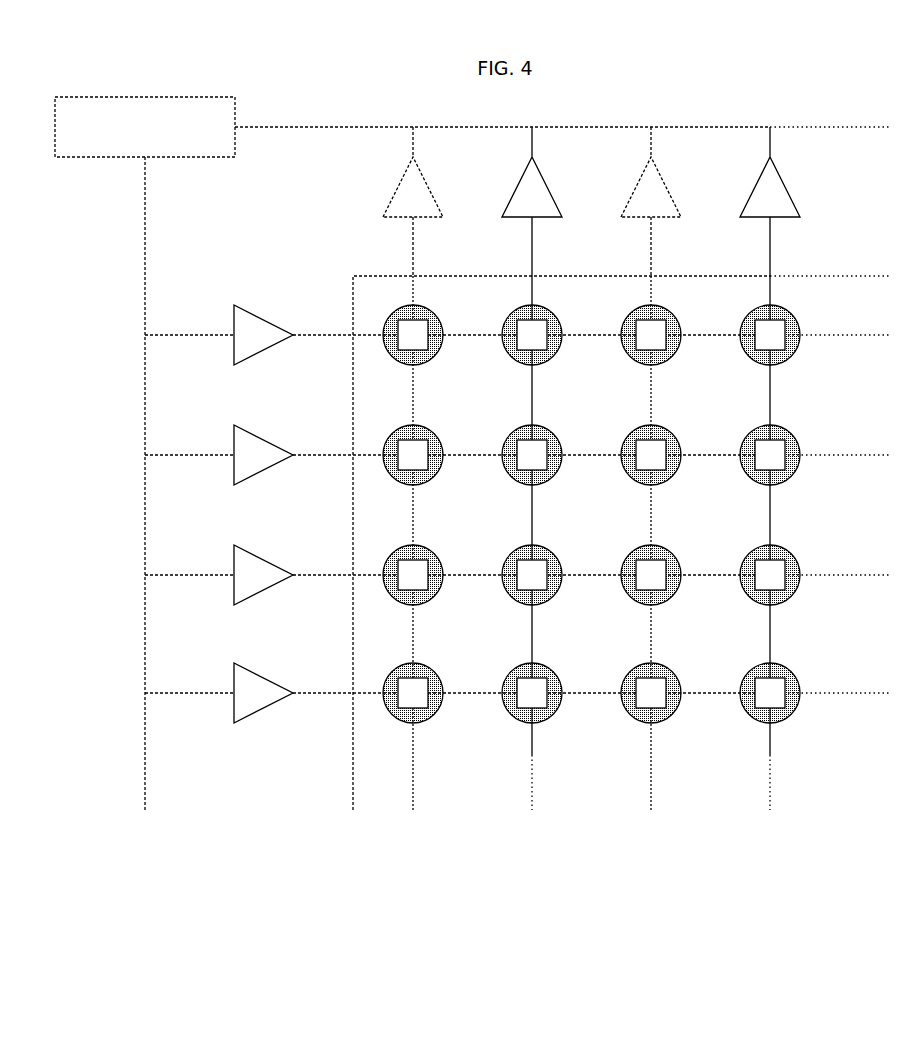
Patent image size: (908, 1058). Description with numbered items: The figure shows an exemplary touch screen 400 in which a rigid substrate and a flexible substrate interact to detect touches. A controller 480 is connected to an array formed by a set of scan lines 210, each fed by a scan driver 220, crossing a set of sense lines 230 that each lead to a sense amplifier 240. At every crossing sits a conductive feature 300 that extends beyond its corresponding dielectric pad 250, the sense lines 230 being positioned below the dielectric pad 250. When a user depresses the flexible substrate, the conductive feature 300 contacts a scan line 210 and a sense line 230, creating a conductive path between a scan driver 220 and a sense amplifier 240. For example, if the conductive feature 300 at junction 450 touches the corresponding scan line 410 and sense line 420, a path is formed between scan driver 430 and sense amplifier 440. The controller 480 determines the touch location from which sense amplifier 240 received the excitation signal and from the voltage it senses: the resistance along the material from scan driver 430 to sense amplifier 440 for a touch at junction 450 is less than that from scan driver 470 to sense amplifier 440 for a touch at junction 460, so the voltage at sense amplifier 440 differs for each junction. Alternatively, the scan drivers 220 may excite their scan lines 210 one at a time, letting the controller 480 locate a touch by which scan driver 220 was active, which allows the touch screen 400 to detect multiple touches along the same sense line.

The touch screen 400 is at (858, 79).
The controller 480 is at (129, 97).
The sense amplifier 240 is at (748, 198).
The sense amplifier 440 is at (555, 201).
The sense line 230 is at (770, 268).
The sense line 420 is at (532, 415).
The scan driver 220 is at (255, 357).
The scan line 210 is at (330, 337).
The scan driver 430 is at (277, 563).
The scan line 410 is at (517, 556).
The scan driver 470 is at (277, 683).
The conductive feature 300 is at (787, 310).
The junction 450 is at (540, 575).
The junction 460 is at (533, 700).
The dielectric pad 250 is at (785, 712).